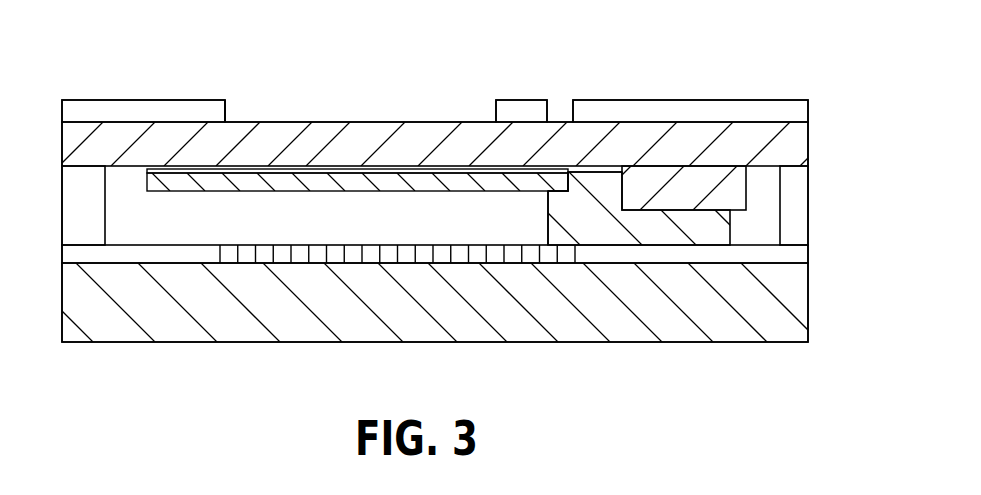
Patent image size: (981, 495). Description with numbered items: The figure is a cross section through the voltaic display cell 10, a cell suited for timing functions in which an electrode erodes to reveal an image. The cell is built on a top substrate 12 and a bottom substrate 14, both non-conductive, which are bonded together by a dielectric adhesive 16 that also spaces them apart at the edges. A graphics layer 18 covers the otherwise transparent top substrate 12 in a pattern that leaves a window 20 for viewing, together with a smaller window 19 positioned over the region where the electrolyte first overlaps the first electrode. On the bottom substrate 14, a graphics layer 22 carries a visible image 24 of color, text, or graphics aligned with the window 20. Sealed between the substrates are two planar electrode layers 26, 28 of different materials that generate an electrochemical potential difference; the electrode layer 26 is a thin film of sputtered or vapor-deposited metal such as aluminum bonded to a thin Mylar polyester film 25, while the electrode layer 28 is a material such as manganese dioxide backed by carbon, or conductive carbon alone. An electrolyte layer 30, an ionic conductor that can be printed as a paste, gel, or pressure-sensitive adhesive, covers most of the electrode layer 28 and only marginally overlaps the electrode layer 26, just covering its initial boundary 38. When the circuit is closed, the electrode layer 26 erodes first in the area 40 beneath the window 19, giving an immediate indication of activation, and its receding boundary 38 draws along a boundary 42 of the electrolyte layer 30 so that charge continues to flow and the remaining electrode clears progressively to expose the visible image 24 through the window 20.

The voltaic display cell 10 is at (143, 73).
The top substrate 12 is at (802, 148).
The bottom substrate 14 is at (742, 308).
The dielectric adhesive 16 is at (72, 182).
The graphics layer 18 is at (152, 100).
The window 19 is at (572, 113).
The window 20 is at (226, 112).
The graphics layer 22 is at (180, 257).
The visible image 24 is at (357, 258).
The Mylar polyester film 25 is at (375, 174).
The electrode layer 26 is at (309, 168).
The electrode layer 28 is at (675, 177).
The electrolyte layer 30 is at (570, 220).
The initial boundary 38 is at (560, 184).
The area 40 is at (600, 183).
The boundary 42 is at (548, 208).